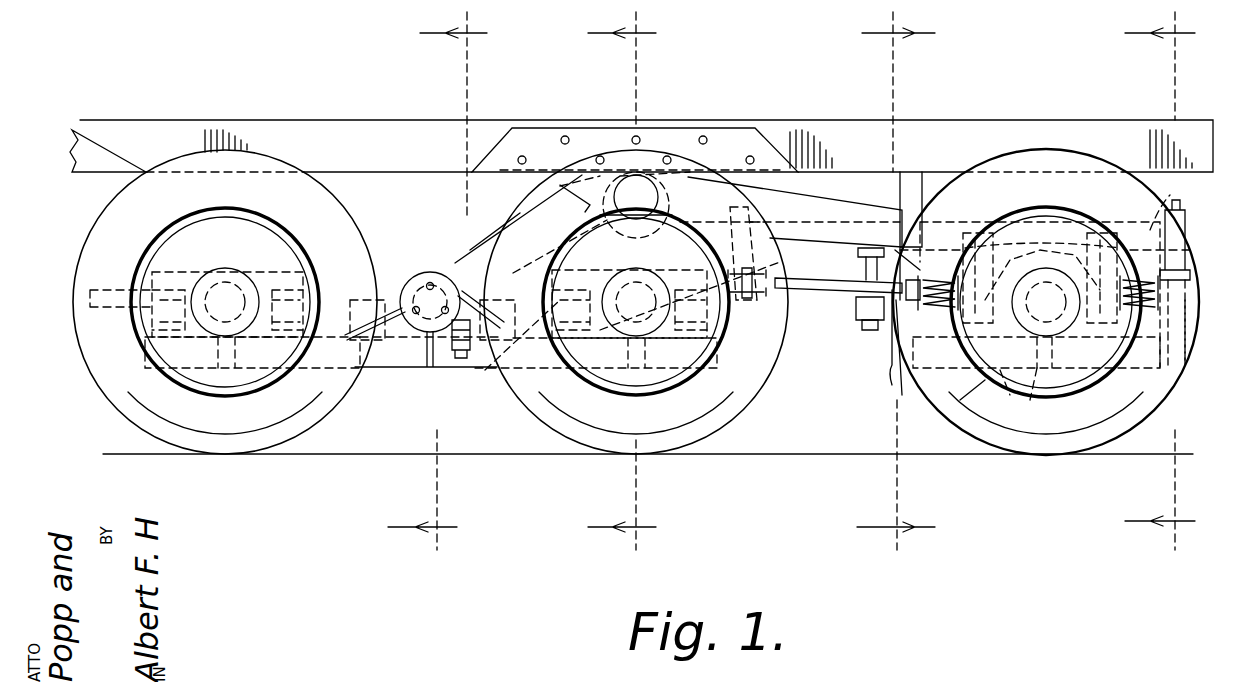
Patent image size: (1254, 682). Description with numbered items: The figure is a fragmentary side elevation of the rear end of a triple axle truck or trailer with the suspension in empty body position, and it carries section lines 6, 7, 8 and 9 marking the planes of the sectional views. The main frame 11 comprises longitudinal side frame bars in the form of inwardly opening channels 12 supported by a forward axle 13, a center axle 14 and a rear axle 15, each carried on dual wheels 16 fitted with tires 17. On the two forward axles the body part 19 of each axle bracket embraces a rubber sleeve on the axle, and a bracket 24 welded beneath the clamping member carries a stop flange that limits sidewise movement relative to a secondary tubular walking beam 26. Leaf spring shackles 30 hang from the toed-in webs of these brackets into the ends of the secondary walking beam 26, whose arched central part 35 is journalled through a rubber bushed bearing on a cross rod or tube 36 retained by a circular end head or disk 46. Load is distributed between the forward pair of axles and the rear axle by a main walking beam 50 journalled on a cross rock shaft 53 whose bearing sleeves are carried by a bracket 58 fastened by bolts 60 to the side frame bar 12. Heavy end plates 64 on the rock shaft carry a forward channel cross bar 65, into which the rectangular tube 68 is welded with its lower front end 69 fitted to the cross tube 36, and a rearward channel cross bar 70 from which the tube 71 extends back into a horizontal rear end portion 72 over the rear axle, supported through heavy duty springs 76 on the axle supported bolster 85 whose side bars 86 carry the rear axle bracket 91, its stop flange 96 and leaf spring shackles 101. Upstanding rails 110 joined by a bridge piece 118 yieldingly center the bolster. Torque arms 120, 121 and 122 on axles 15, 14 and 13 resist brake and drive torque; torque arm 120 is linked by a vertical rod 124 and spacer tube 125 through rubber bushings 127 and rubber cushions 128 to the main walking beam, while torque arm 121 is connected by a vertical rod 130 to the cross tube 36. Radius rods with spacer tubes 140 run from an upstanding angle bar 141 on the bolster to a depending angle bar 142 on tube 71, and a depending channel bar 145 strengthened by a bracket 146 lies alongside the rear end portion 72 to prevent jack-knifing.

The section line 6- 6 is at (438, 281).
The section line 7- 7 is at (622, 282).
The section line 8- 8 is at (896, 285).
The section line 9- 9 is at (1161, 281).
The main frame 11 is at (1101, 94).
The main longitudinal side frame bar 12 is at (155, 120).
The first or forward axle 13 is at (226, 300).
The second or center axle 14 is at (637, 300).
The rear or third axle 15 is at (1045, 300).
The dual wheels 16 is at (97, 209).
The tires 17 is at (215, 458).
The body part of axle bracket 19 is at (275, 263).
The bracket 24 is at (222, 381).
The secondary tubular walking beam 26 is at (363, 380).
The leaf spring shackle 30 is at (307, 318).
The arched central part of secondary walking beam 35 is at (400, 375).
The cross rod or tube 36 is at (418, 262).
The circular end head or disk 46 is at (412, 280).
The main walking beam 50 is at (856, 190).
The cross rock shaft 53 is at (640, 190).
The bracket 58 is at (524, 126).
The bolts 60 is at (598, 155).
The heavy end plate or block 64 is at (592, 210).
The cross bar 65 is at (560, 184).
The tube 68 is at (520, 213).
The lower front end of tube 69 is at (458, 262).
The cross bar 70 is at (690, 197).
The tube 71 is at (790, 206).
The lower rear end portion 72 is at (1165, 191).
The heavy duty helical compression spring 76 is at (925, 304).
The axle supported bolster 85 is at (974, 386).
The side bar of bolster 86 is at (1004, 390).
The axle bracket 91 is at (1044, 232).
The bumper or stop flange 96 is at (1032, 400).
The leaf spring shackle 101 is at (988, 273).
The upstanding rails 110 is at (1190, 345).
The bridge piece 118 is at (1180, 212).
The torque arm 120 is at (856, 305).
The torque arm 121 is at (515, 375).
The torque arm 122 is at (128, 278).
The vertical rod 124 is at (876, 340).
The spacer tube 125 is at (866, 268).
The rubber bushings 127 is at (866, 332).
The rubber cushions 128 is at (868, 248).
The vertical rod 130 is at (468, 378).
The spacer tubes 140 is at (816, 294).
The upstanding angle bar 141 is at (890, 380).
The depending angle bar 142 is at (755, 214).
The depending channel bar 145 is at (936, 172).
The bracket 146 is at (920, 176).